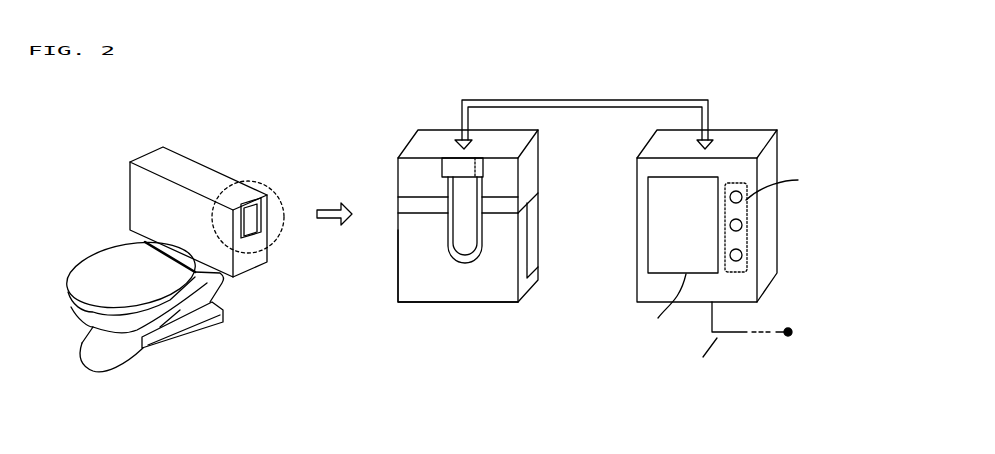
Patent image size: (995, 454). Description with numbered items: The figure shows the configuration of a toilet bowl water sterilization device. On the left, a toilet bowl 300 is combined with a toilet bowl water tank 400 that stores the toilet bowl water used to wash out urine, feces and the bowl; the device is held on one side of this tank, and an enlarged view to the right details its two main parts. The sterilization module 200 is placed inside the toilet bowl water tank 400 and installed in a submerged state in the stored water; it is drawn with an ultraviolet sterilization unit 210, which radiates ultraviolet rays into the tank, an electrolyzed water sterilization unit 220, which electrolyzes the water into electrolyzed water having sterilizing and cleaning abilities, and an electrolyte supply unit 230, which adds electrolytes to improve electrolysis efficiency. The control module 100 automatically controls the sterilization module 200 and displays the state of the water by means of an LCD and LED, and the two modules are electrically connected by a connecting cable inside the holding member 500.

The control module 100 is at (862, 126).
The sterilization module 200 is at (448, 197).
The ultraviolet sterilization unit 210 is at (448, 220).
The electrolyzed water sterilization unit 220 is at (405, 283).
The electrolyte supply unit 230 is at (405, 175).
The toilet bowl 300 is at (112, 372).
The toilet bowl water tank 400 is at (177, 127).
The holding member 500 is at (558, 98).